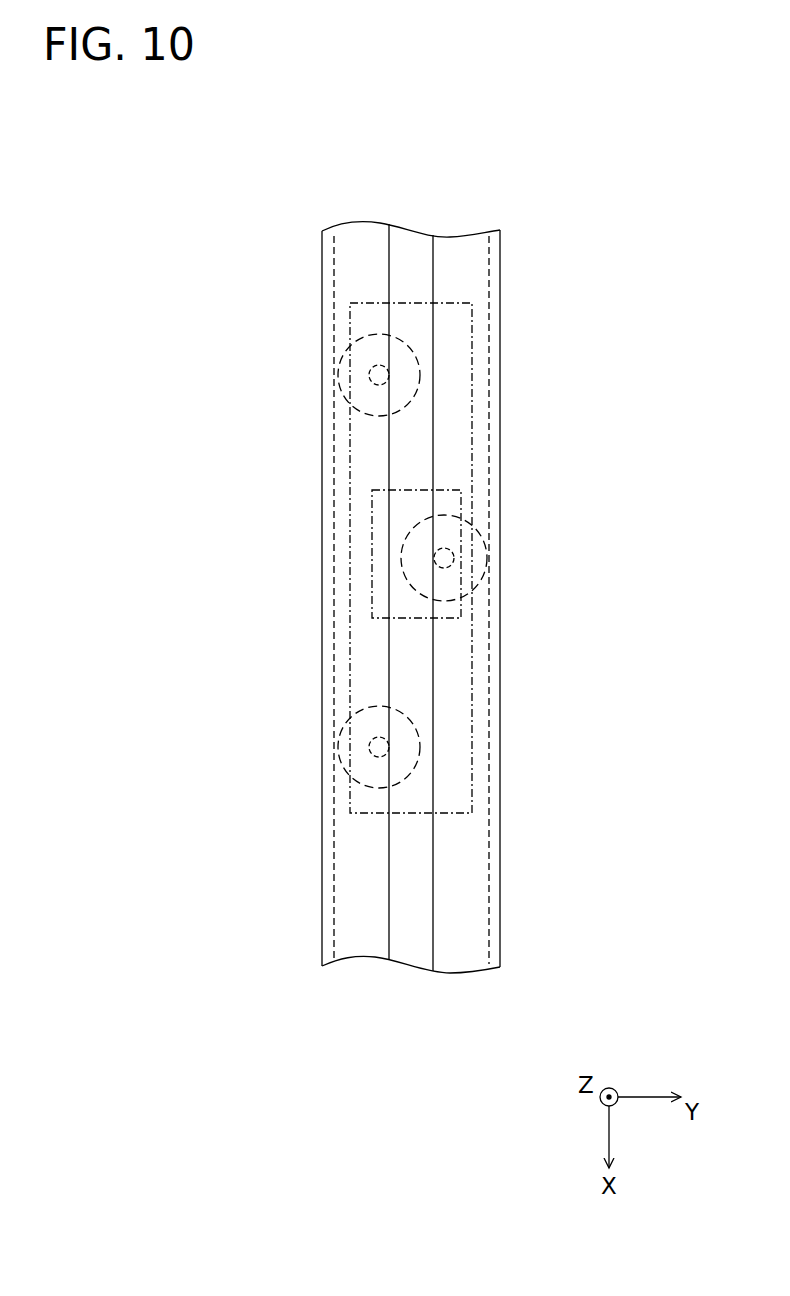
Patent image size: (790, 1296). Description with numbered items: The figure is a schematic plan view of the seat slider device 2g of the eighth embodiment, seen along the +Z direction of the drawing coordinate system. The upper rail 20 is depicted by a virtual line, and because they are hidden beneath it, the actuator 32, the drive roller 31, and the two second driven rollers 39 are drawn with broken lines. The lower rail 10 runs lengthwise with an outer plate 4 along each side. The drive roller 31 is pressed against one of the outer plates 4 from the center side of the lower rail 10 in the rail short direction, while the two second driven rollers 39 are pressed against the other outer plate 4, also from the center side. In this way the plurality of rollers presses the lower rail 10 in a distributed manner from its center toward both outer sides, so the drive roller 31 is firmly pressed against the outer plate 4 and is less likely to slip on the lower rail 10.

The seat slider device 2g is at (216, 250).
The lower rail 10 is at (355, 956).
The outer plates 4 is at (322, 868).
The upper rail 20 is at (463, 358).
The actuator 32 is at (465, 500).
The drive roller 31 is at (484, 556).
The second driven rollers 39 is at (340, 378).